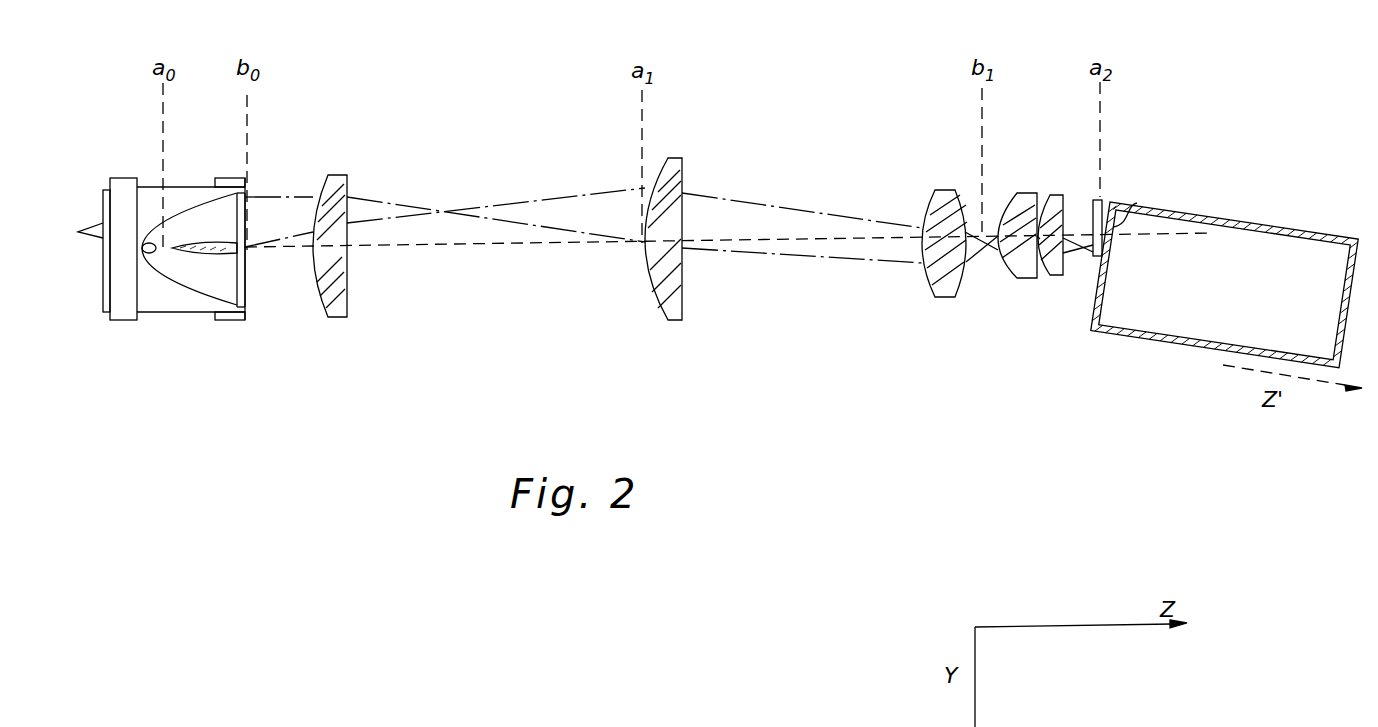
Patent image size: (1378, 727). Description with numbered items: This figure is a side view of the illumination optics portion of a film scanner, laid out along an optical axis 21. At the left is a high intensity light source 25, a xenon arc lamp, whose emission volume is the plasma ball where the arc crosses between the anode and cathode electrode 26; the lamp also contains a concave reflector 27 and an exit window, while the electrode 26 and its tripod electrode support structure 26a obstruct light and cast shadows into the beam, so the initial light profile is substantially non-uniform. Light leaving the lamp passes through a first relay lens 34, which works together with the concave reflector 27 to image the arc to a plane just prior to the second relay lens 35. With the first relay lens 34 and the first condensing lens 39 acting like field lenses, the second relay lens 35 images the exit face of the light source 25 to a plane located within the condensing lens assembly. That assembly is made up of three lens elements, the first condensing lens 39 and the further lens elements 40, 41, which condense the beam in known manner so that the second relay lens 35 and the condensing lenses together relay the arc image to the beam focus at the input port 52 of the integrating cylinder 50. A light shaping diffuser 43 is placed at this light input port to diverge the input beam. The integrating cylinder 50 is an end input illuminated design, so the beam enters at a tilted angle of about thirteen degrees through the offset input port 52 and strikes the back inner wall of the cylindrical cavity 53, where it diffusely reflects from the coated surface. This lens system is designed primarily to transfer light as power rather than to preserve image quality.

The optical axis 21 is at (490, 247).
The light source 25 is at (121, 320).
The electrode 26 is at (205, 255).
The electrode support structure 26a is at (250, 288).
The reflector 27 is at (172, 312).
The first relay lens 34 is at (342, 298).
The second relay lens 35 is at (675, 320).
The first condensing lens 39 is at (938, 292).
The lens element 40 is at (1017, 272).
The lens element 41 is at (1052, 272).
The light shaping diffuser 43 is at (1090, 200).
The integrating cylinder 50 is at (1145, 340).
The input port 52 is at (1137, 203).
The cylindrical cavity 53 is at (1285, 297).